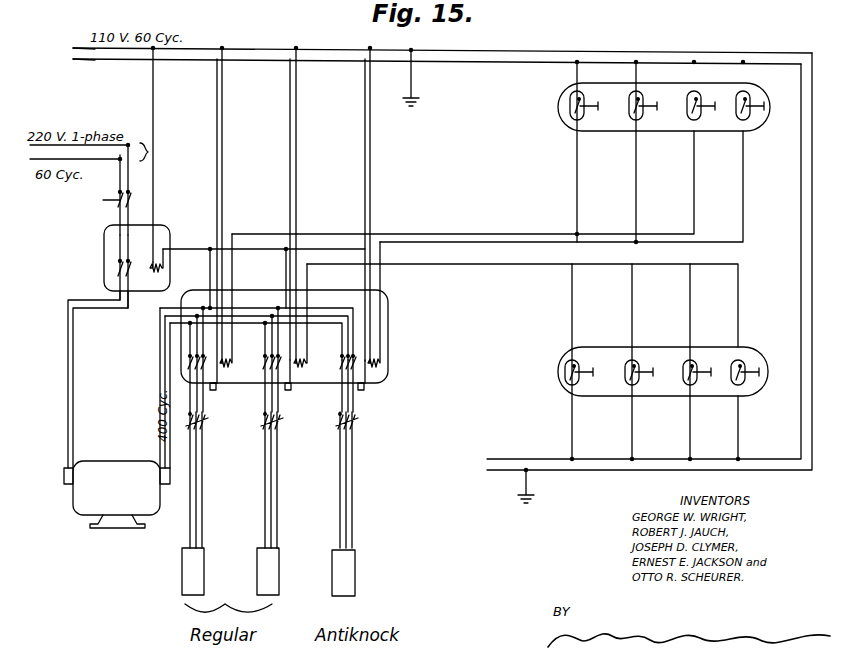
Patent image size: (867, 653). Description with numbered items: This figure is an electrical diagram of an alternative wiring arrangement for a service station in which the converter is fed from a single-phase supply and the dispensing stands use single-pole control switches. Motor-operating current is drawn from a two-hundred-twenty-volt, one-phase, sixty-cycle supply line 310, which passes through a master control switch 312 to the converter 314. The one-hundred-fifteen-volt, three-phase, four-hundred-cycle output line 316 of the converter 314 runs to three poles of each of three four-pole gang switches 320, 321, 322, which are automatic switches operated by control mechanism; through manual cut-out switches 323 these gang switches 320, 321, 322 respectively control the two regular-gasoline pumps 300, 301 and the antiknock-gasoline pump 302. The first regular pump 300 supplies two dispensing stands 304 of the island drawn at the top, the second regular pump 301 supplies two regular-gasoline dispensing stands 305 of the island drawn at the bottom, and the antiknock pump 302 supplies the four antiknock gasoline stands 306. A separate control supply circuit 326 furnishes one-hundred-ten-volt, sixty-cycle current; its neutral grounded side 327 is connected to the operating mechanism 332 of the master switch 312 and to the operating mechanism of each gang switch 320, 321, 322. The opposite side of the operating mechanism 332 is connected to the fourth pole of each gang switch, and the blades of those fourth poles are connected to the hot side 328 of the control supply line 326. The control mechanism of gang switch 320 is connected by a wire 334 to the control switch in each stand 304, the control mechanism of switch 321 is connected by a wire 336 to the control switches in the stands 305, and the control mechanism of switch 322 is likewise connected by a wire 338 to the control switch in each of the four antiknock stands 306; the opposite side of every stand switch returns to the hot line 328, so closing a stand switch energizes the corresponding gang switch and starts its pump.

The regular-gasoline pump 300 is at (196, 578).
The regular-gasoline pump 301 is at (271, 578).
The antiknock-gasoline pump 302 is at (347, 578).
The dispensing stands 304 is at (572, 118).
The regular-gasoline dispensing stands 305 is at (627, 384).
The antiknock gasoline stands 306 is at (632, 118).
The supply line 310 is at (150, 152).
The master control switch 312 is at (104, 244).
The converter 314 is at (90, 508).
The output line 316 is at (160, 348).
The 4-pole gang switch 320 is at (212, 386).
The 4-pole gang switch 321 is at (297, 386).
The 4-pole gang switch 322 is at (388, 383).
The manual cut-out switches 323 is at (206, 425).
The control supply circuit 326 is at (63, 50).
The neutral grounded side 327 is at (510, 48).
The hot side 328 is at (547, 62).
The operating mechanism 332 is at (166, 268).
The wire 334 is at (448, 233).
The wire 336 is at (490, 264).
The control line 338 is at (500, 241).